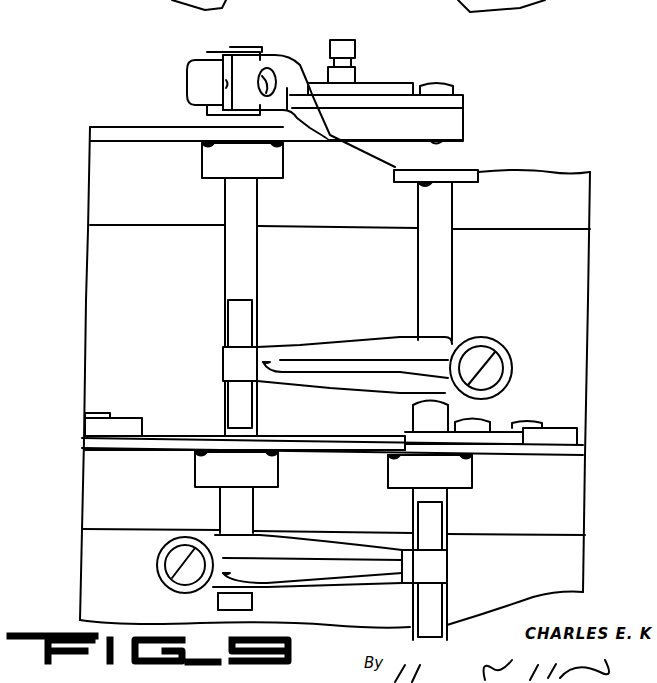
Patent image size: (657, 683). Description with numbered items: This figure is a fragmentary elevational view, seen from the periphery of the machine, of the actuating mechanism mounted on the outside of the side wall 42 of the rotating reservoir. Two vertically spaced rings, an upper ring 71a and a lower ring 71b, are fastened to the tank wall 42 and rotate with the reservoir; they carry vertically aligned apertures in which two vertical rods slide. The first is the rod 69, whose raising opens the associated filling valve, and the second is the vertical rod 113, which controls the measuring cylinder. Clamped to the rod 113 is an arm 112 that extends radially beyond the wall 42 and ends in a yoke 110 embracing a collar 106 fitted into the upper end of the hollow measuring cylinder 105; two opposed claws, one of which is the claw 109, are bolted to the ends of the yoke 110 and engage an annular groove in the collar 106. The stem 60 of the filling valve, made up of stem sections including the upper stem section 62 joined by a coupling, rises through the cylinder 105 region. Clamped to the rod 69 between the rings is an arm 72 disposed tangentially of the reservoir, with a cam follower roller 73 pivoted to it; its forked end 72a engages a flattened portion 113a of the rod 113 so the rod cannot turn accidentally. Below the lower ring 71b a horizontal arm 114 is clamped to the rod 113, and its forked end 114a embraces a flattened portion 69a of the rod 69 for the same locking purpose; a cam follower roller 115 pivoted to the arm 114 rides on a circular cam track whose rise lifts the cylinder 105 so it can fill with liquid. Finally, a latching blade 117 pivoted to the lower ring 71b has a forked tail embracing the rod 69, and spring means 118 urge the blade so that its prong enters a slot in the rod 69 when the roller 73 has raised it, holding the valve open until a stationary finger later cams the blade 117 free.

The side wall of the reservoir 42 is at (584, 338).
The stem 60 is at (343, 38).
The stem section 62 is at (347, 79).
The rod 69 is at (437, 260).
The flattened portion of the rod 69a is at (426, 596).
The upper ring 71a is at (118, 181).
The lower ring 71b is at (108, 490).
The arm 72 is at (350, 348).
The forked end of arm 72a is at (240, 362).
The cam follower roller 73 is at (512, 369).
The hollow cylinder 105 is at (392, 156).
The collar 106 is at (393, 90).
The claw 109 is at (440, 104).
The yoke 110 is at (433, 126).
The arm 112 is at (295, 80).
The vertical rod 113 is at (240, 266).
The flattened portion of the rod 113a is at (243, 323).
The horizontal arm 114 is at (335, 583).
The forked end of arm 114a is at (430, 564).
The cam follower roller 115 is at (160, 566).
The latching blade 117 is at (85, 434).
The spring means 118 is at (140, 414).